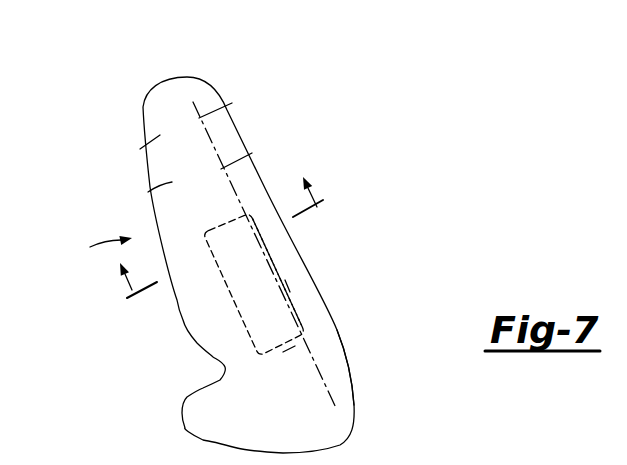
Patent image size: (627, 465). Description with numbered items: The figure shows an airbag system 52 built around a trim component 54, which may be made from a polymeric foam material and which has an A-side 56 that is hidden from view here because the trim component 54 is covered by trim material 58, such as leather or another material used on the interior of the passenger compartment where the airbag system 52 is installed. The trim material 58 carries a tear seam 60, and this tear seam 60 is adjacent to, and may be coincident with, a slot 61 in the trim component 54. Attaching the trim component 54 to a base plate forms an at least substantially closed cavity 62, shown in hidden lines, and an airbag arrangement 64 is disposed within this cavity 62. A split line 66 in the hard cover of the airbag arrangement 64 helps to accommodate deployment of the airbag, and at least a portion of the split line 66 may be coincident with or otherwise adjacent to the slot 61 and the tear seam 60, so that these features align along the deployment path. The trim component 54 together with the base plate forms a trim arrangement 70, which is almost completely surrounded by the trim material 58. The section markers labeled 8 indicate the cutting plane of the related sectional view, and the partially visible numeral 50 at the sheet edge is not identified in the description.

The seat assembly 50 is at (418, 459).
The trim component body 52 is at (272, 97).
The lower side wall 54 is at (361, 371).
The outer layer 56 is at (147, 144).
The inner layer 58 is at (150, 189).
The upper edge 60 is at (232, 103).
The center line 61 is at (257, 152).
The pocket 62 is at (292, 287).
The pocket side wall 64 is at (310, 314).
The pocket bottom 66 is at (290, 360).
The direction of insertion 70 is at (99, 247).
The section line for FIG. 8 is at (230, 256).